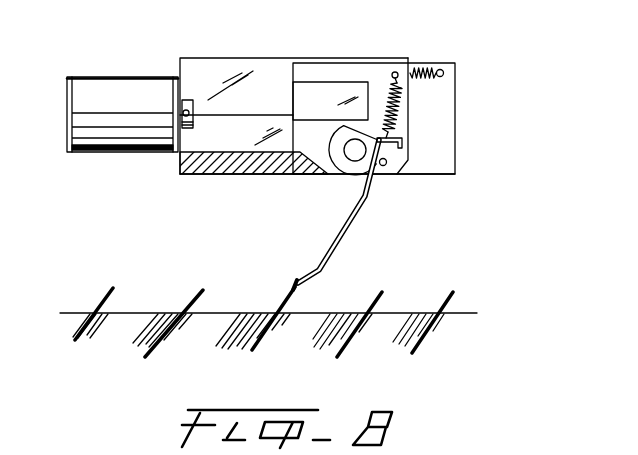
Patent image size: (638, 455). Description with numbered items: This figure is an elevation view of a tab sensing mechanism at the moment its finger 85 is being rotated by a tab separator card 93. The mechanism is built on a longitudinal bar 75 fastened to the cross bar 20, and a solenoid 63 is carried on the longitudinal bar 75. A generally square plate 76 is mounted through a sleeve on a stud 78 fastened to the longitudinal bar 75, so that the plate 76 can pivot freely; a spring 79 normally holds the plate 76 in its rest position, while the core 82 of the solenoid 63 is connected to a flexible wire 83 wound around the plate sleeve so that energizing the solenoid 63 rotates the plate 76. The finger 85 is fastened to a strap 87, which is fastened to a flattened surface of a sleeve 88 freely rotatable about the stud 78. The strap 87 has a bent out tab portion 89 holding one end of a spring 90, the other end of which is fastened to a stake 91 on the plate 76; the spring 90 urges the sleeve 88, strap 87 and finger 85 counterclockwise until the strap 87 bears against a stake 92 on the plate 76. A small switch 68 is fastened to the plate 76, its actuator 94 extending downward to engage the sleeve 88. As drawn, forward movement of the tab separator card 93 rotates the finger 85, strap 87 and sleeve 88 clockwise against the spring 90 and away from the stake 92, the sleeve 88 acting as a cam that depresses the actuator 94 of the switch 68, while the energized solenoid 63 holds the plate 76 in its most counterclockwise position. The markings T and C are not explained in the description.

The cross bar 20 is at (180, 163).
The solenoid 63 is at (112, 83).
The small switch 68 is at (330, 90).
The longitudinal bar 75 is at (232, 60).
The plate 76 is at (405, 118).
The stud 78 is at (343, 177).
The spring 79 is at (427, 67).
The core 82 is at (189, 100).
The flexible wire 83 is at (270, 112).
The finger 85 is at (295, 279).
The strap 87 is at (351, 226).
The sleeve 88 is at (329, 175).
The bent out tab portion 89 is at (405, 153).
The spring 90 is at (400, 96).
The stake 91 is at (400, 60).
The stake 92 is at (391, 178).
The tab separator card 93 is at (298, 297).
The actuator 94 is at (341, 124).
The plant tops T is at (194, 292).
The crop row soil C is at (242, 341).